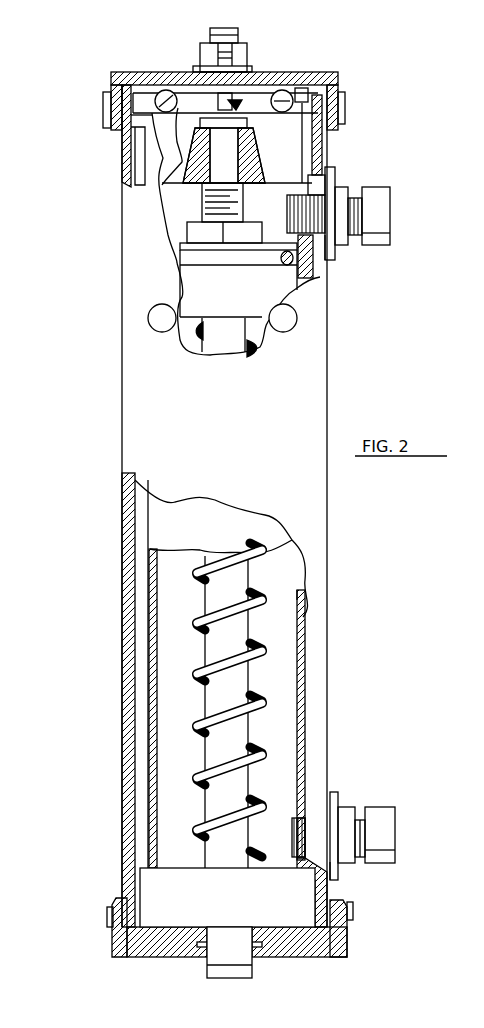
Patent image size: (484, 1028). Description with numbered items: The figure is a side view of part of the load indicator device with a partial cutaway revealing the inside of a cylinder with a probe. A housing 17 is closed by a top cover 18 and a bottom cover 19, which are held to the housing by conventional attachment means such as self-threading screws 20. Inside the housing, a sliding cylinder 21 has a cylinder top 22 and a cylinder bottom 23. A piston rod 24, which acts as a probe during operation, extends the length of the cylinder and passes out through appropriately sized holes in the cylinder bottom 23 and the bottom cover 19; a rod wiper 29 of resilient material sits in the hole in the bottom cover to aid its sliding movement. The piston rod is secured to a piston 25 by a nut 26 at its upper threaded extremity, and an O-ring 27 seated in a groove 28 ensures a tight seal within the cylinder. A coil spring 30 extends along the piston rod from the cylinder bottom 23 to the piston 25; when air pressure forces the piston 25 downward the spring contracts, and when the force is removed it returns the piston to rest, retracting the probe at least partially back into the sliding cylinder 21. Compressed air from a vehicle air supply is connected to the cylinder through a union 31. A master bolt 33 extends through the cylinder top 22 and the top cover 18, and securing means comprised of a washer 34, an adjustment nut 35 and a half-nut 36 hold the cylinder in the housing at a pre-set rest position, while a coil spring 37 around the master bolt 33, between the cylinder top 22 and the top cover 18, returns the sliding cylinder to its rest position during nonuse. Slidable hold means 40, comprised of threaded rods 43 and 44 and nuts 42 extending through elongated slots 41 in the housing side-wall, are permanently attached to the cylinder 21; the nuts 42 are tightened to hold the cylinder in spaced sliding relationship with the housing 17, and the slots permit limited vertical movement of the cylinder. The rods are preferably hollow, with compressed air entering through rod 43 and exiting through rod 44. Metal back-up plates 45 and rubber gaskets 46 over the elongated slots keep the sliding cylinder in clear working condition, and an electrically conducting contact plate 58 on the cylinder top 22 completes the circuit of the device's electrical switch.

The housing 17 is at (145, 427).
The top cover 18 is at (112, 72).
The bottom cover 19 is at (125, 948).
The self-threading screws 20 is at (105, 100).
The sliding cylinder 21 is at (155, 660).
The cylinder top 22 is at (140, 146).
The cylinder bottom 23 is at (170, 893).
The piston rod 24 is at (238, 622).
The piston 25 is at (262, 284).
The nut 26 is at (197, 237).
The O-ring 27 is at (300, 282).
The groove 28 is at (280, 252).
The rod wiper 29 is at (258, 950).
The coil spring 30 is at (265, 708).
The union 31 is at (395, 202).
The master bolt 33 is at (230, 138).
The washer 34 is at (250, 70).
The adjustment nut 35 is at (208, 66).
The half-nut 36 is at (247, 50).
The coil spring 37 is at (133, 113).
The slidable hold means 40 is at (330, 232).
The elongated slots 41 is at (318, 187).
The nuts 42 is at (340, 190).
The threaded rod 43 is at (358, 200).
The threaded rod 44 is at (362, 830).
The metal back-up plates 45 is at (327, 252).
The rubber gaskets 46 is at (306, 242).
The contact plate 58 is at (205, 127).